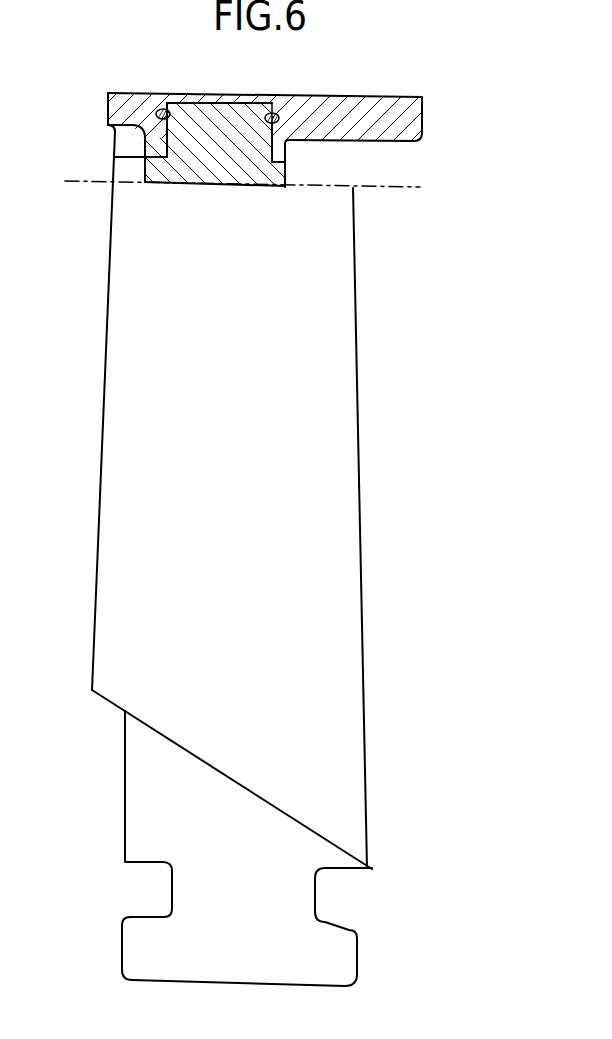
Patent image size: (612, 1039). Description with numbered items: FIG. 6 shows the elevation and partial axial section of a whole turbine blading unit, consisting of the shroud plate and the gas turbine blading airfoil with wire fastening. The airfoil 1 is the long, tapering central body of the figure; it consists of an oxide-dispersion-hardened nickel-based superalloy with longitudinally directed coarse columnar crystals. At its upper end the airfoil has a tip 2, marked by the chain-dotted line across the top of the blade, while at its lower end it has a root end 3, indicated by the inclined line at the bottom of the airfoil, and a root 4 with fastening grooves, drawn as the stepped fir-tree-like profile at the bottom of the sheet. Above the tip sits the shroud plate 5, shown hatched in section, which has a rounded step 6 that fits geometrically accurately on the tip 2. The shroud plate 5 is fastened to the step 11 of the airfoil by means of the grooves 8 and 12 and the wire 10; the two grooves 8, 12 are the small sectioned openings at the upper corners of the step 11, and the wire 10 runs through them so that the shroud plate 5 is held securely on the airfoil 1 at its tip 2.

The turbine blade 1 is at (357, 493).
The tip 2 is at (287, 175).
The root end 3 is at (228, 750).
The root 4 is at (357, 947).
The shroud plate 5 is at (348, 120).
The rounded step 6 is at (287, 147).
The groove 8 is at (275, 148).
The wire 10 is at (143, 97).
The step 11 is at (212, 143).
The groove 12 is at (175, 107).